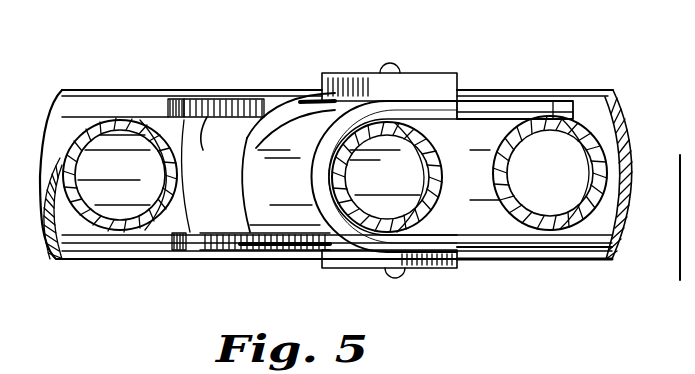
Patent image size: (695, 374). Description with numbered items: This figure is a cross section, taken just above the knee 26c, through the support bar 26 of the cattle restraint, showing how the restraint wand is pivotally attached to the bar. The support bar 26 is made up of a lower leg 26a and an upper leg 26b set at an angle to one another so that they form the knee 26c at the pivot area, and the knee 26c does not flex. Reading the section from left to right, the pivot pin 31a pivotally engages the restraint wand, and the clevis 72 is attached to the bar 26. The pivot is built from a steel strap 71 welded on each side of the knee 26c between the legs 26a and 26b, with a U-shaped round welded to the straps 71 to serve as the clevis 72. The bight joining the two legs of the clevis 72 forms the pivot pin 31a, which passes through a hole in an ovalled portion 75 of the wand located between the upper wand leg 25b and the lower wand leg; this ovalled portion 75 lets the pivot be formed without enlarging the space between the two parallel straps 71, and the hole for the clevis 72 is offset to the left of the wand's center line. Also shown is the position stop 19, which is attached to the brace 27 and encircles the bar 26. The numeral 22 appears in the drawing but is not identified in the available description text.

The position stop 19 is at (508, 93).
The housing body 22 is at (139, 262).
The upper wand leg 25b is at (197, 252).
The support bar 26 is at (300, 189).
The lower leg 26a is at (432, 73).
The upper leg 26b is at (310, 258).
The knee 26c is at (246, 130).
The brace 27 is at (615, 202).
The pivot pin 31a is at (163, 98).
The steel strap 71 is at (305, 93).
The clevis 72 is at (222, 99).
The ovalled portion 75 is at (190, 222).